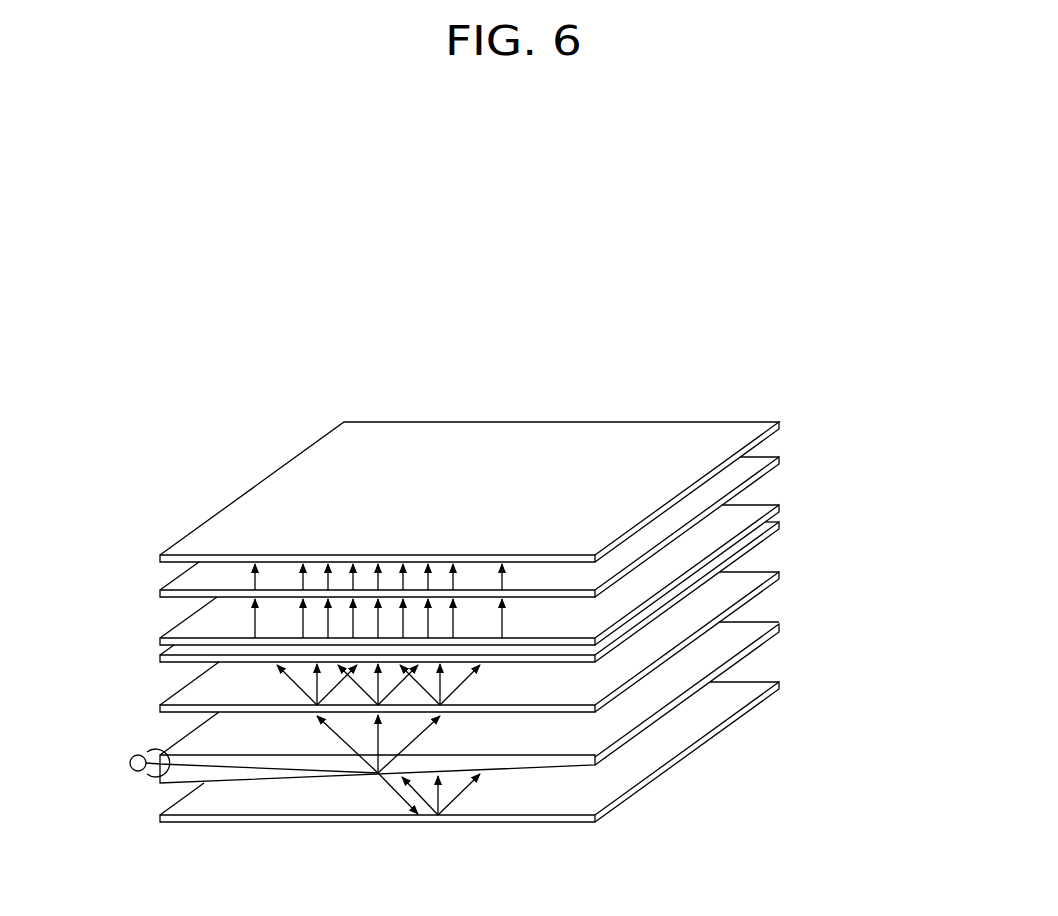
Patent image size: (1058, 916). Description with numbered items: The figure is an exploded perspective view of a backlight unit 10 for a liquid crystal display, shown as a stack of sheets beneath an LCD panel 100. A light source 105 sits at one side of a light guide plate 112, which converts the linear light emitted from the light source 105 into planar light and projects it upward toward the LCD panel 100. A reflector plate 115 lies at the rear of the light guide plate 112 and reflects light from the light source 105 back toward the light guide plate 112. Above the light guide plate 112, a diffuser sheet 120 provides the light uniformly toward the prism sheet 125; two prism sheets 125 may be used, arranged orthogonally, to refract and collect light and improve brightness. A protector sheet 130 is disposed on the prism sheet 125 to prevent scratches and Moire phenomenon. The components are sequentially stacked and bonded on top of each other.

The backlight unit 10 is at (833, 388).
The LCD panel 100 is at (550, 438).
The light source 105 is at (122, 757).
The light guide plate 112 is at (779, 630).
The reflector plate 115 is at (779, 682).
The diffuser sheet 120 is at (779, 572).
The prism sheet 125 is at (779, 525).
The protector sheet 130 is at (780, 458).